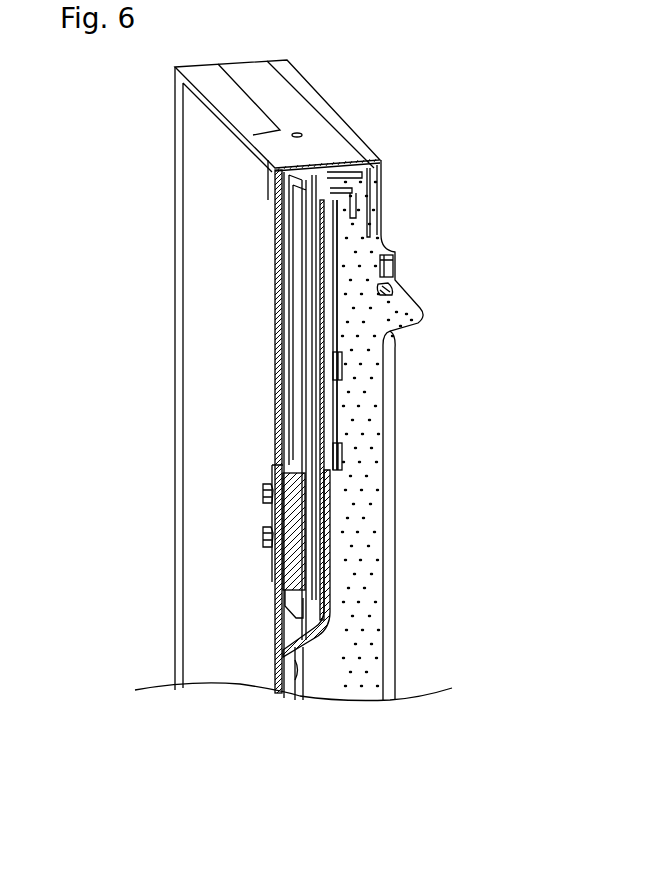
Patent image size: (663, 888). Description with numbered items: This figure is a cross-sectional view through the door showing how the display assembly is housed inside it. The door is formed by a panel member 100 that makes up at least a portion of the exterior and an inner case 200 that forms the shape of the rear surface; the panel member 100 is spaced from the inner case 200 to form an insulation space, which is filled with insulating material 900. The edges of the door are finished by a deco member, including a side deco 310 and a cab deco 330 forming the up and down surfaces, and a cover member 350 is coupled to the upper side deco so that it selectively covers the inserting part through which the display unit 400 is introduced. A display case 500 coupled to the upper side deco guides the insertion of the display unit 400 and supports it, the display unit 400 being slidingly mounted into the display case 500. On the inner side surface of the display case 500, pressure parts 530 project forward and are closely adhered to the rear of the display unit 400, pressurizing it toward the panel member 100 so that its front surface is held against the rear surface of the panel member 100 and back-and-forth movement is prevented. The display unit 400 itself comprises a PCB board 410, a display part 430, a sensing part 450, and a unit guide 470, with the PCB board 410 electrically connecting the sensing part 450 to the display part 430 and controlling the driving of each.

The panel member 100 is at (200, 553).
The inner case 200 is at (392, 358).
The side deco 310 is at (178, 287).
The cab deco 330 is at (365, 152).
The cover member 350 is at (323, 143).
The display unit 400 is at (322, 530).
The PCB board 410 is at (338, 455).
The display part 430 is at (282, 578).
The sensing part 450 is at (262, 533).
The unit guide 470 is at (297, 335).
The display case 500 is at (338, 418).
The pressure part 530 is at (306, 538).
The insulating material 900 is at (362, 614).